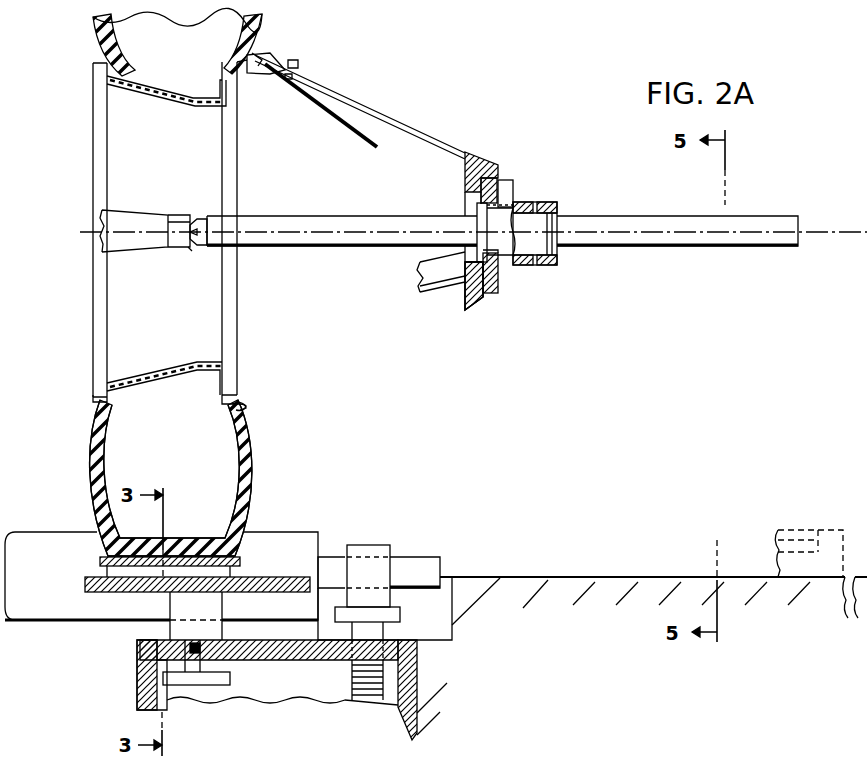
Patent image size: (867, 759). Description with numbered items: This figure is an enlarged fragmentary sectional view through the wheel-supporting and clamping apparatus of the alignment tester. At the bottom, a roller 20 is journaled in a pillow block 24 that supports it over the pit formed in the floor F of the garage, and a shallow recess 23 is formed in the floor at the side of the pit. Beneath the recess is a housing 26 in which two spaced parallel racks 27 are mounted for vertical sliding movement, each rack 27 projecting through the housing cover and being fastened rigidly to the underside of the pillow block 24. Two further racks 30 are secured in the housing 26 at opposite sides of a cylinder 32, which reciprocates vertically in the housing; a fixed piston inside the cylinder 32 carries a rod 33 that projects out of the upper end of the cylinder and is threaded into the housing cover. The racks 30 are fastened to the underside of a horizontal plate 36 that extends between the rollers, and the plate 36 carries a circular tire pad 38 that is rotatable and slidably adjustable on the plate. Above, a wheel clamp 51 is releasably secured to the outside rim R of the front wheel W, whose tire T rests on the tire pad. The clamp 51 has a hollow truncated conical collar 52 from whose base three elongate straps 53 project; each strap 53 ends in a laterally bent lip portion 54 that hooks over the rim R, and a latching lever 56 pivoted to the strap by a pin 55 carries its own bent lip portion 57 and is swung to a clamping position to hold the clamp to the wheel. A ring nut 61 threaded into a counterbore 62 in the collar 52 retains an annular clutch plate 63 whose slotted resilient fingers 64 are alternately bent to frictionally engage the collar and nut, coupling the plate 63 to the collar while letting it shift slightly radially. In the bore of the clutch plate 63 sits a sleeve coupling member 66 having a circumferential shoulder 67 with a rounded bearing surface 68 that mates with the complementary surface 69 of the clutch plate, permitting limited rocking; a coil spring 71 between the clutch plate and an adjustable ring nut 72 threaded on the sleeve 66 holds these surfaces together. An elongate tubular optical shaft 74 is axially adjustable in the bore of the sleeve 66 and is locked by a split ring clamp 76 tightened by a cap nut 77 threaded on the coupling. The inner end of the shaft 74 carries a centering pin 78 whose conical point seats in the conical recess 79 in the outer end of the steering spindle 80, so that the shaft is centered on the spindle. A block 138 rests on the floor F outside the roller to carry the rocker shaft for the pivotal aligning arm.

The front wheel W is at (93, 170).
The tire T is at (93, 456).
The outside rim R is at (240, 408).
The floor F is at (582, 577).
The roller 20 is at (280, 532).
The shallow recess 23 is at (445, 586).
The pillow block 24 is at (385, 545).
The housing 26 is at (137, 674).
The rack 27 is at (352, 676).
The rack 30 is at (170, 605).
The cylinder 32 is at (212, 700).
The rod 33 is at (200, 672).
The plate 36 is at (85, 585).
The tire pad 38 is at (100, 560).
The wheel clamp 51 is at (480, 146).
The collar 52 is at (490, 296).
The strap 53 is at (380, 114).
The lip portion 54 is at (262, 57).
The pin 55 is at (298, 66).
The latching lever 56 is at (352, 124).
The lip portion 57 is at (258, 75).
The ring nut 61 is at (505, 192).
The counterbore 62 is at (500, 287).
The clutch plate 63 is at (472, 302).
The resilient finger 64 is at (490, 176).
The sleeve coupling member 66 is at (508, 250).
The shoulder 67 is at (477, 212).
The rounded bearing surface 68 is at (480, 232).
The mating surface 69 is at (447, 262).
The coil spring 71 is at (522, 201).
The adjustable ring nut 72 is at (545, 201).
The optical shaft 74 is at (688, 216).
The split ring clamp 76 is at (558, 232).
The cap nut 77 is at (560, 207).
The centering pin 78 is at (193, 212).
The conical recess 79 is at (190, 251).
The steering spindle 80 is at (160, 212).
The block 138 is at (820, 530).